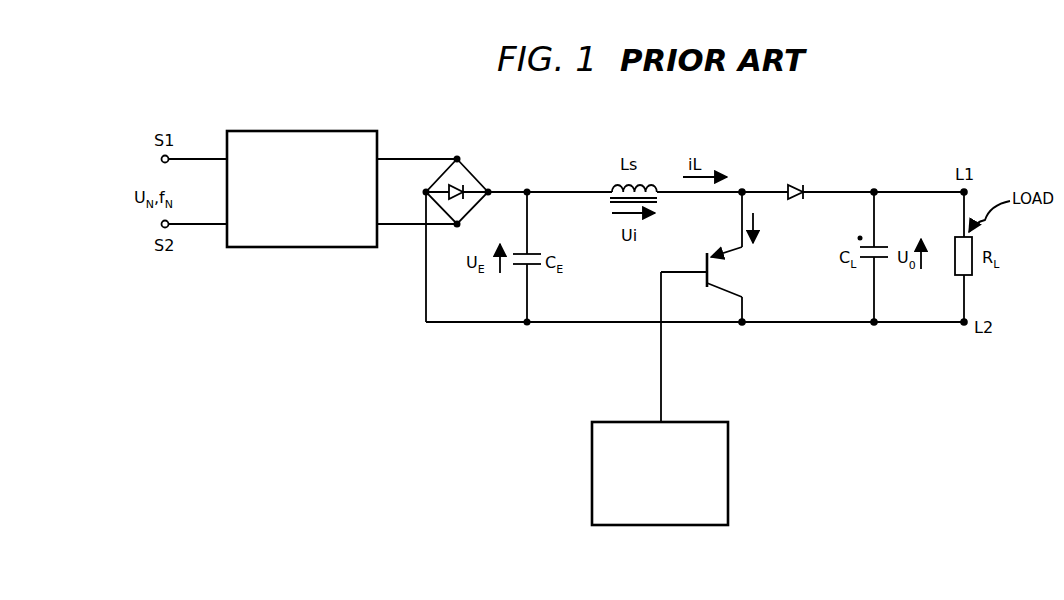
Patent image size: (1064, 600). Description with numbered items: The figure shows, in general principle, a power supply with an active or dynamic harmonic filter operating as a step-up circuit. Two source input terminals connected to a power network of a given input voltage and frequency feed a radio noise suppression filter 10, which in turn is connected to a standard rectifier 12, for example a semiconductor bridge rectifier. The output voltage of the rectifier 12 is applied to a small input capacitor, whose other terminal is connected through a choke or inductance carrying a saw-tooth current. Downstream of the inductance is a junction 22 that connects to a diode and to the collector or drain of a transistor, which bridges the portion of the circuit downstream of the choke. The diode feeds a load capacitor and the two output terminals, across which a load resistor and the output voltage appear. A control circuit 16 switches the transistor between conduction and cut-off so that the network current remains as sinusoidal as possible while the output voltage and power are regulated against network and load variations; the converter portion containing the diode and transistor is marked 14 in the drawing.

The radio noise suppression filter 10 is at (299, 131).
The rectifier 12 is at (480, 161).
The step-up converter 14 is at (807, 295).
The control circuit 16 is at (694, 422).
The junction 22 is at (743, 186).